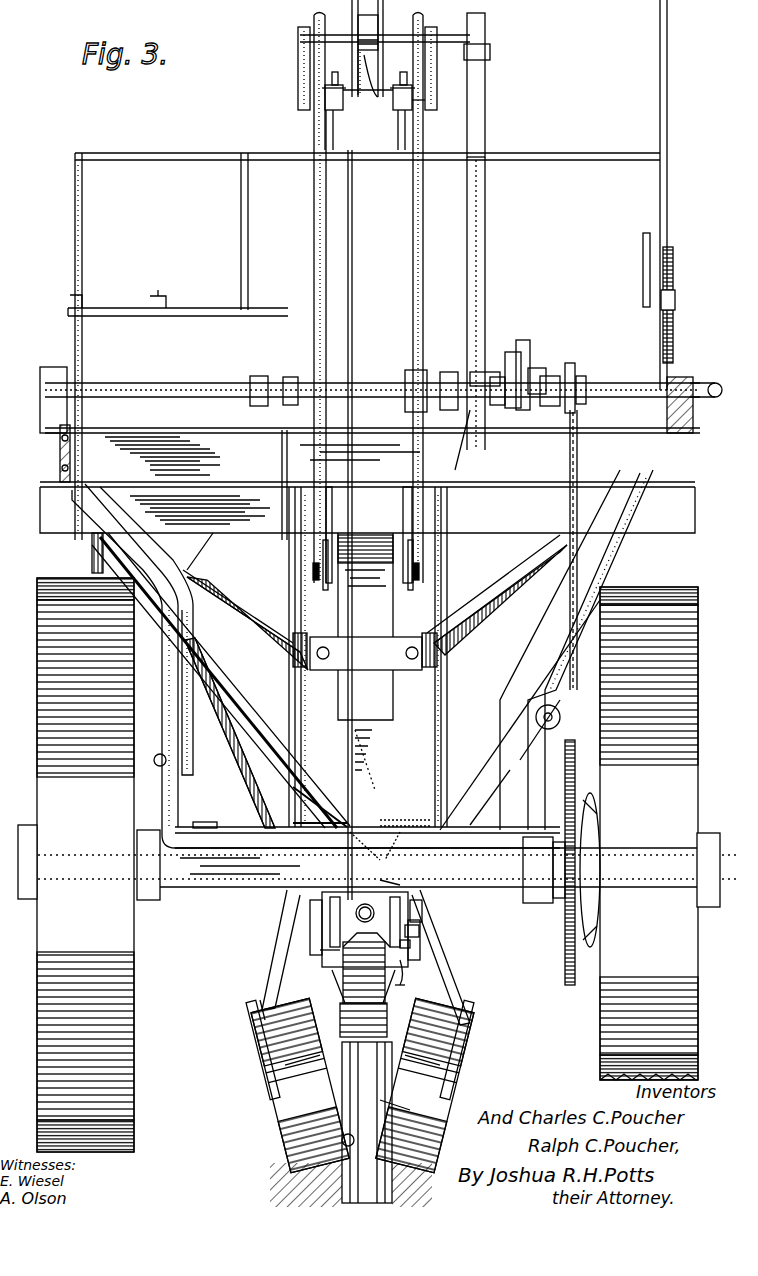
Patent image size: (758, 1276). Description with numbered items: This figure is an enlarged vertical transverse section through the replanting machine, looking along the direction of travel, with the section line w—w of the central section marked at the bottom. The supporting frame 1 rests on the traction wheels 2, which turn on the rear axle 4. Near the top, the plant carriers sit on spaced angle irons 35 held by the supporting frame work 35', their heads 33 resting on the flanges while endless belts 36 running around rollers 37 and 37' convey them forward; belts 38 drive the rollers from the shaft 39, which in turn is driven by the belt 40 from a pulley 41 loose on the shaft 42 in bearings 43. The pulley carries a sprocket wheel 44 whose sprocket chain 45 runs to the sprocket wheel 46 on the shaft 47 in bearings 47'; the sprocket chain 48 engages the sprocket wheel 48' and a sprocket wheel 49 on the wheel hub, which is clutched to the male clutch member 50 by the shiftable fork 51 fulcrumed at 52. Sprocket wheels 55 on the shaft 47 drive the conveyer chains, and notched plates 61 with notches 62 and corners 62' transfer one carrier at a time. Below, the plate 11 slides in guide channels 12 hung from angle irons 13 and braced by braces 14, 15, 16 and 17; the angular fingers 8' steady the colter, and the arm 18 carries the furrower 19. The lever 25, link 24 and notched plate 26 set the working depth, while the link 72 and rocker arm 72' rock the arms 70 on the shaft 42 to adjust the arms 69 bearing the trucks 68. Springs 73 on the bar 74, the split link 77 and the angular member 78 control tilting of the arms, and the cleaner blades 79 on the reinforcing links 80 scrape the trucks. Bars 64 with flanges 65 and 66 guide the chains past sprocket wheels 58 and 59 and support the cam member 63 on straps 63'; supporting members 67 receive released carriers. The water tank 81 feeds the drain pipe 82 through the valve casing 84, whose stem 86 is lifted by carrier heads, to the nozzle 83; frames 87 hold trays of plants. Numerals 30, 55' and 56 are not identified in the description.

The supporting frame 1 is at (45, 450).
The traction wheel 2 is at (369, 865).
The rear axle 4 is at (380, 866).
The angular fingers 8' is at (361, 993).
The plate 11 is at (365, 730).
The guide channels 12 is at (300, 700).
The angle irons 13 is at (225, 514).
The brace member 14 is at (260, 626).
The brace member 15 is at (481, 797).
The brace member 16 is at (262, 600).
The brace member 17 is at (515, 770).
The arm 18 is at (366, 1072).
The furrower 19 is at (425, 1118).
The link 24 is at (643, 262).
The hand operable lever 25 is at (668, 205).
The notched segmental plate 26 is at (674, 342).
The belt 30 is at (314, 80).
The carrier head 33 is at (393, 88).
The angle irons 35 is at (334, 73).
The supporting frame work 35' is at (395, 535).
The endless belts 36 is at (412, 86).
The roller 37 is at (362, 366).
The roller 37' is at (402, 298).
The belts 38 is at (299, 60).
The shaft 39 is at (470, 36).
The belt 40 is at (486, 272).
The pulley 41 is at (448, 372).
The shaft 42 is at (405, 382).
The bearings 43 is at (405, 400).
The sprocket wheel 44 is at (512, 352).
The sprocket chain 45 is at (500, 372).
The sprocket wheel 46 is at (463, 440).
The shaft 47 is at (370, 396).
The bearings 47' is at (593, 400).
The sprocket chain 48 is at (585, 550).
The sprocket wheel 48' is at (587, 383).
The sprocket wheel 49 is at (566, 930).
The male clutch member 50 is at (600, 950).
The shiftable fork 51 is at (722, 390).
The fulcrum 52 is at (560, 717).
The sprocket wheels 55 is at (395, 130).
The lever 55' is at (430, 112).
The rod 56 is at (334, 128).
The sprocket wheels 58 is at (423, 915).
The sprocket wheels 59 is at (380, 560).
The circular plates 61 is at (384, 8).
The notches 62 is at (405, 318).
The corners 62' is at (388, 68).
The inclined channel cam member 63 is at (448, 934).
The supporting straps 63' is at (451, 948).
The bars 64 is at (310, 920).
The inwardly turned flanges 65 is at (413, 972).
The inwardly extending flanges 66 is at (407, 996).
The supporting members 67 is at (262, 1028).
The trucks 68 is at (300, 1130).
The arms 69 is at (414, 548).
The rocker arms 70 is at (394, 400).
The link 72 is at (546, 362).
The rocker arm 72' is at (566, 363).
The helical compression springs 73 is at (345, 824).
The bar 74 is at (395, 819).
The split link 77 is at (376, 849).
The inverted V-shaped member 78 is at (401, 877).
The cleaner blades 79 is at (312, 1074).
The reinforcing links 80 is at (285, 960).
The water tank 81 is at (367, 346).
The drain pipe 82 is at (260, 690).
The nozzle 83 is at (262, 1000).
The valve casing 84 is at (340, 893).
The valve stem 86 is at (318, 950).
The frame 87 is at (240, 304).
The section line w is at (340, 1188).